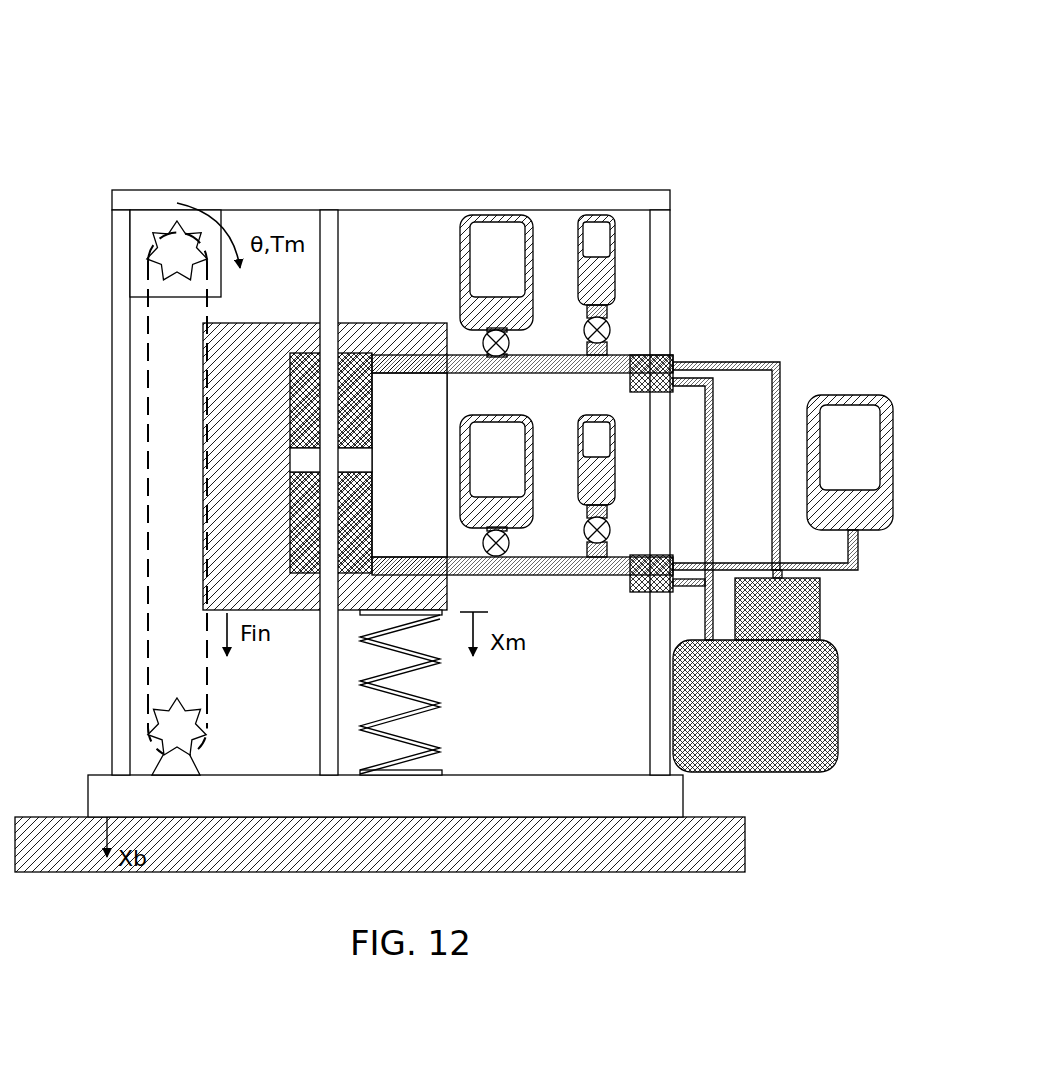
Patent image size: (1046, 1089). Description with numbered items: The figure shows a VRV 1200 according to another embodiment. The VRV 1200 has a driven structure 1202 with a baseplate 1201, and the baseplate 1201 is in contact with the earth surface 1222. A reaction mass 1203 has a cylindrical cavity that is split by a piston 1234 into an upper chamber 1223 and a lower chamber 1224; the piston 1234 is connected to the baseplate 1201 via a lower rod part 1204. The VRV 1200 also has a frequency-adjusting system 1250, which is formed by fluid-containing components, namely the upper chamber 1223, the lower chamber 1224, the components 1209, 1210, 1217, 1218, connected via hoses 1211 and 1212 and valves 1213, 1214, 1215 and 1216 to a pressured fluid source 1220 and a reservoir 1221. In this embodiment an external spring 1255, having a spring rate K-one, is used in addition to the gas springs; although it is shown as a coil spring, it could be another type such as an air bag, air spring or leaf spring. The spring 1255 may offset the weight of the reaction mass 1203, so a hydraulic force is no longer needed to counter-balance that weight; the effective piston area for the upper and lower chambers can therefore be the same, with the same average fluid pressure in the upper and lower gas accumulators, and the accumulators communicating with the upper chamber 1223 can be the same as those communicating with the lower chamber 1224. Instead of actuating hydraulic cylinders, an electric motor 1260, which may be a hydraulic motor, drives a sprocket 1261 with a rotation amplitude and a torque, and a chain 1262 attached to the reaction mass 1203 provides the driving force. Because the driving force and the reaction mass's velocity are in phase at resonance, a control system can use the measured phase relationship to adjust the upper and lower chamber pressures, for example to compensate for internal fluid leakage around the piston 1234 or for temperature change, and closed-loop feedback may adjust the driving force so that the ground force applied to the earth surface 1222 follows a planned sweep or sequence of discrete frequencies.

The VRV 1200 is at (742, 33).
The frequency-adjusting system 1250 is at (130, 23).
The baseplate 1201 is at (88, 797).
The driven structure 1202 is at (397, 205).
The reaction mass 1203 is at (385, 323).
The lower rod part 1204 is at (320, 725).
The fluid containing component 1209 is at (598, 213).
The fluid containing component 1210 is at (597, 415).
The hose 1211 is at (548, 375).
The hose 1212 is at (543, 578).
The valve 1213 is at (675, 358).
The valve 1214 is at (640, 594).
The valve 1215 is at (510, 343).
The valve 1216 is at (510, 543).
The fluid containing component 1217 is at (495, 213).
The fluid containing component 1218 is at (496, 415).
The pressured fluid source 1220 is at (850, 395).
The reservoir 1221 is at (840, 705).
The earth surface 1222 is at (745, 845).
The upper chamber 1223 is at (300, 381).
The lower chamber 1224 is at (300, 539).
The piston 1234 is at (362, 461).
The external spring 1255 is at (440, 705).
The electric motor 1260 is at (135, 268).
The sprocket 1261 is at (175, 722).
The chain 1262 is at (147, 460).